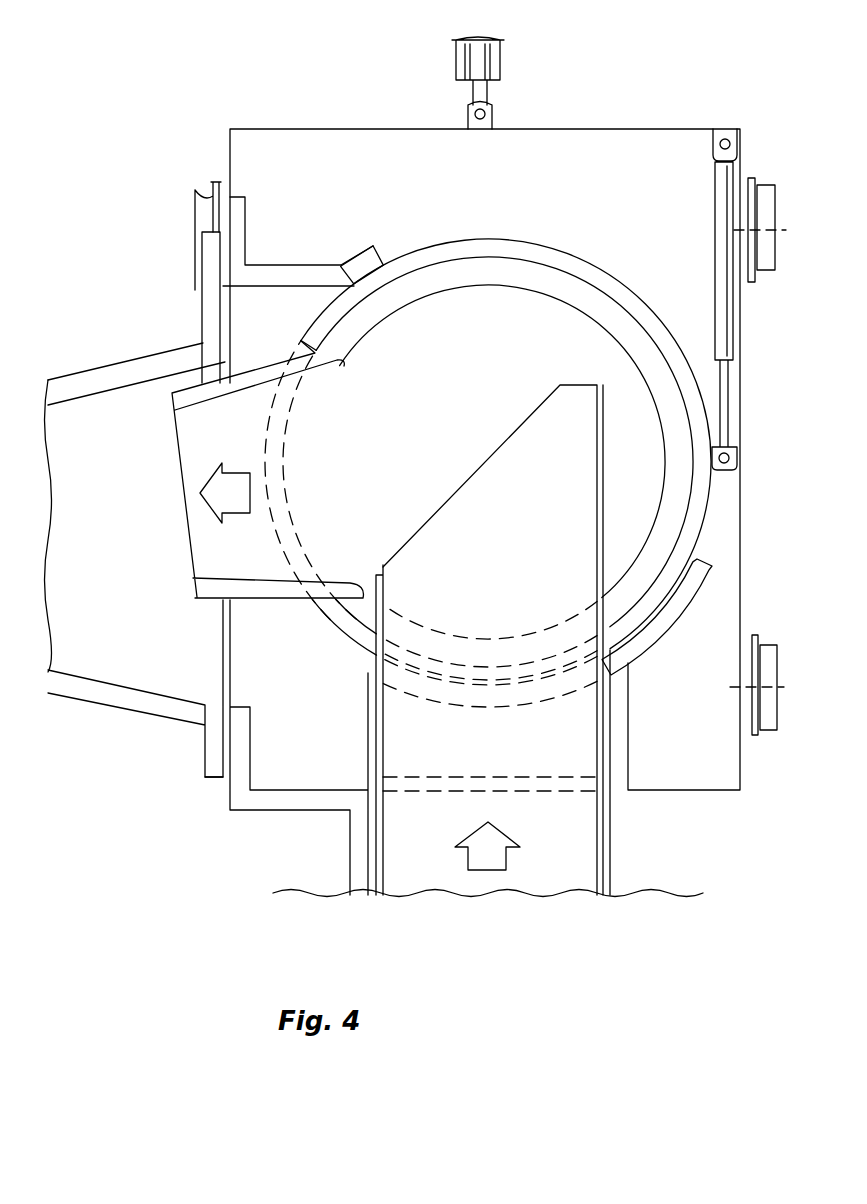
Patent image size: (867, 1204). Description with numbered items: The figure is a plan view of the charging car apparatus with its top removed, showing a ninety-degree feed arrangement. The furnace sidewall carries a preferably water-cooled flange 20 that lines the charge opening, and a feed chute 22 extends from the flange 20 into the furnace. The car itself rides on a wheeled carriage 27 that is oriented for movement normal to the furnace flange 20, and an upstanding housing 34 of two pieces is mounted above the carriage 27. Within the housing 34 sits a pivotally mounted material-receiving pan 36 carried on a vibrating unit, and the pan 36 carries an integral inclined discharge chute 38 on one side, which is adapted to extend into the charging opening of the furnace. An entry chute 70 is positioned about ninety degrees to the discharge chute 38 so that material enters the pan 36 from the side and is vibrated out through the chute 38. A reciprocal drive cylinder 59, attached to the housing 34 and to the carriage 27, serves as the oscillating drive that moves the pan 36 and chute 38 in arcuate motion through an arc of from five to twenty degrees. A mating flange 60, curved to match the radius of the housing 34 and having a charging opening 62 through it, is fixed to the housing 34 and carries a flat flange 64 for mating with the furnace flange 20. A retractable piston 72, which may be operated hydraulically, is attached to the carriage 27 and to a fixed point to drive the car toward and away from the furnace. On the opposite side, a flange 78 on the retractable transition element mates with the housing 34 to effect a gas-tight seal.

The flange 20 is at (200, 268).
The feed chute 22 is at (99, 556).
The carriage 27 is at (487, 180).
The housing 34 is at (640, 288).
The material-receiving pan 36 is at (394, 431).
The discharge chute 38 is at (214, 564).
The reciprocal drive cylinder 59 is at (714, 198).
The mating flange 60 is at (358, 247).
The charging opening 62 is at (256, 295).
The flat flange 64 is at (195, 190).
The entry chute 70 is at (512, 528).
The retractable piston 72 is at (498, 63).
The flange 78 is at (665, 635).